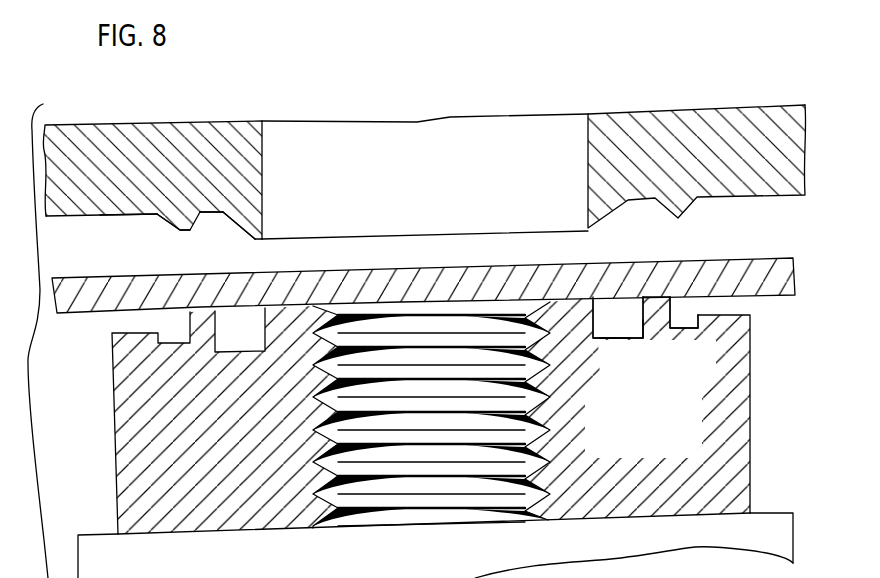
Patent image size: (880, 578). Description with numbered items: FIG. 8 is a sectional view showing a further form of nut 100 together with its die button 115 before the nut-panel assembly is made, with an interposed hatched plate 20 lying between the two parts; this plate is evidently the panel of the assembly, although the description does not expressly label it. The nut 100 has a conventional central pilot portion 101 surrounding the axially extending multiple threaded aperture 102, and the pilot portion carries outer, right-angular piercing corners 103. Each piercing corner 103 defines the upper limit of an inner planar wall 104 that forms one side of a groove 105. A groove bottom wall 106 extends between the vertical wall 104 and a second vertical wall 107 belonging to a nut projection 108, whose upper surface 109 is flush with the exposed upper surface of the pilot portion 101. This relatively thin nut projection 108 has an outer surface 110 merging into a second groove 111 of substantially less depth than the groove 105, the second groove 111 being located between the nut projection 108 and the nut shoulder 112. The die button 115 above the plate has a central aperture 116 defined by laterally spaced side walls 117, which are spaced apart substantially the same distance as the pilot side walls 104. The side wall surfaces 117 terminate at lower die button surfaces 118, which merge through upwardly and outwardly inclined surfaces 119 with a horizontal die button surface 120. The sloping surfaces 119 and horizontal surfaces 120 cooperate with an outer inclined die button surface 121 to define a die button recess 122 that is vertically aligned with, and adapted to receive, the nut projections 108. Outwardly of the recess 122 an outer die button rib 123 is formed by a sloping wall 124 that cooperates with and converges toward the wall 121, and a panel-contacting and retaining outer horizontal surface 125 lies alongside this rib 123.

The plate 20 is at (380, 275).
The nut 100 is at (460, 378).
The central pilot portion 101 is at (555, 311).
The threaded aperture 102 is at (523, 360).
The piercing corners 103 is at (595, 299).
The inner planar wall 104 is at (593, 328).
The groove 105 is at (613, 349).
The groove bottom wall 106 is at (624, 338).
The second vertical wall 107 is at (644, 322).
The nut projection 108 is at (670, 312).
The upper surface 109 is at (657, 297).
The outer surface 110 is at (694, 297).
The second groove 111 is at (688, 314).
The nut shoulder 112 is at (733, 455).
The die button 115 is at (446, 112).
The central aperture 116 is at (357, 130).
The side walls 117 is at (262, 132).
The lower die button surfaces 118 is at (262, 235).
The inclined surfaces 119 is at (240, 224).
The horizontal die button surface 120 is at (210, 212).
The outer inclined die button surface 121 is at (192, 214).
The die button recess 122 is at (215, 226).
The outer die button rib 123 is at (180, 222).
The sloping wall 124 is at (173, 219).
The outer horizontal surface 125 is at (72, 214).